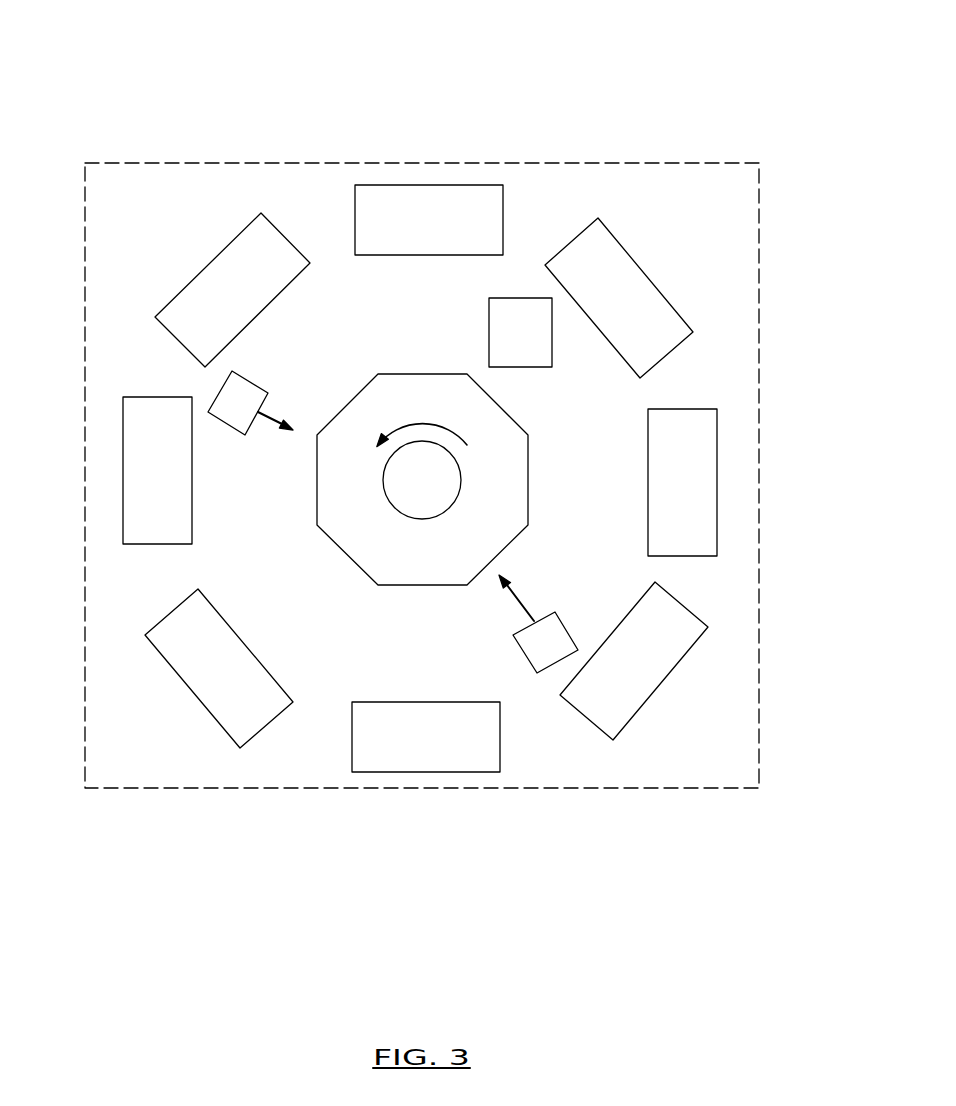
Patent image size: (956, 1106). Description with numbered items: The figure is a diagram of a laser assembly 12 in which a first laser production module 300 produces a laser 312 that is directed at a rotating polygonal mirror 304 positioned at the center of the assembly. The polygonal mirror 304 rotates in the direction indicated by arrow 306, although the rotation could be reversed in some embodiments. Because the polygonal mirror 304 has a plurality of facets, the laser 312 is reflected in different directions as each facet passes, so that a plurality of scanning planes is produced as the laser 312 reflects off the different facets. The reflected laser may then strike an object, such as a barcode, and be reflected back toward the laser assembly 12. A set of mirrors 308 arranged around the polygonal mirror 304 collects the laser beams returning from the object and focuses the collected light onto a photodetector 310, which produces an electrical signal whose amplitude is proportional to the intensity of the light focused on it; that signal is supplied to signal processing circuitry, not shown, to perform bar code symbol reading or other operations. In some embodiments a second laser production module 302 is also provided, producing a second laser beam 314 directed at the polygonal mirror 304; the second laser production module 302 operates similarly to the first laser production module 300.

The laser assembly 12 is at (560, 131).
The first laser production module 300 is at (248, 377).
The second laser production module 302 is at (562, 615).
The polygonal mirror 304 is at (347, 552).
The arrow 306 is at (422, 458).
The mirrors 308 is at (418, 183).
The photodetector 310 is at (489, 327).
The laser 312 is at (280, 425).
The laser beam 314 is at (514, 600).